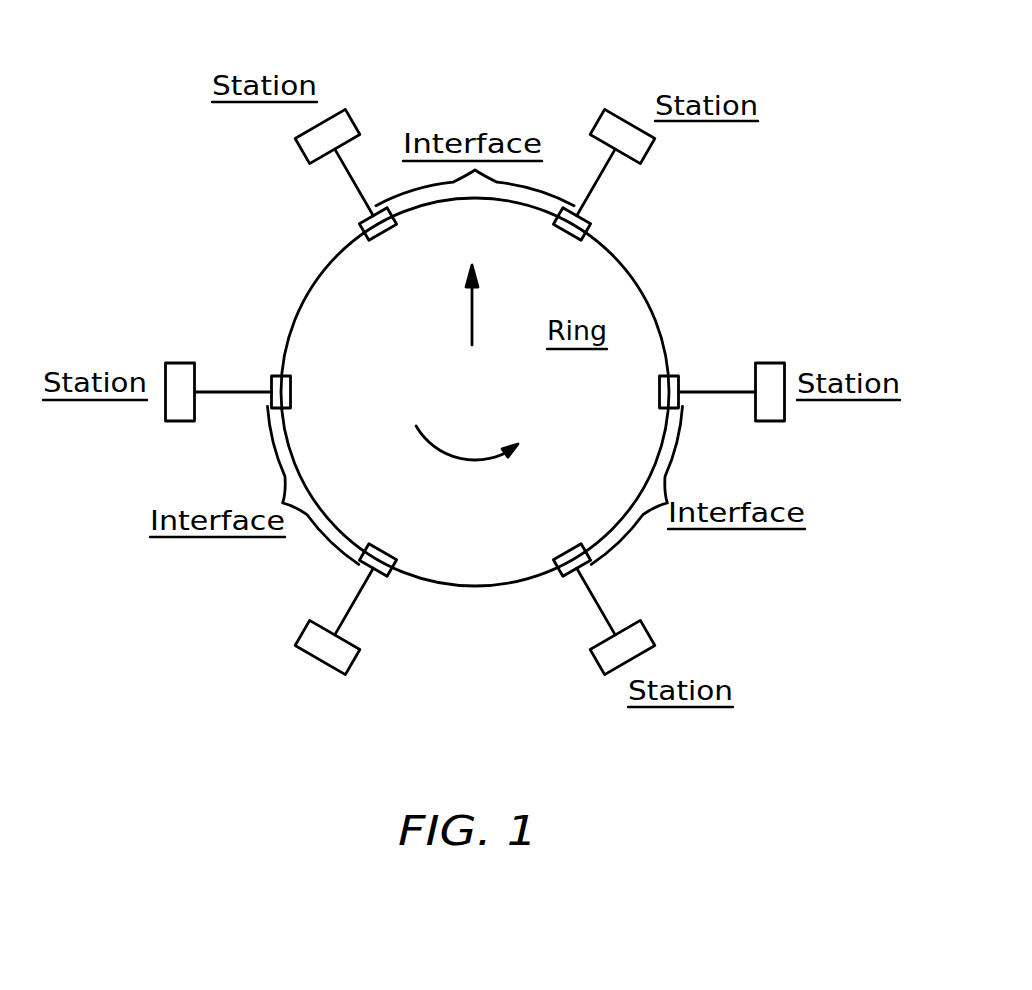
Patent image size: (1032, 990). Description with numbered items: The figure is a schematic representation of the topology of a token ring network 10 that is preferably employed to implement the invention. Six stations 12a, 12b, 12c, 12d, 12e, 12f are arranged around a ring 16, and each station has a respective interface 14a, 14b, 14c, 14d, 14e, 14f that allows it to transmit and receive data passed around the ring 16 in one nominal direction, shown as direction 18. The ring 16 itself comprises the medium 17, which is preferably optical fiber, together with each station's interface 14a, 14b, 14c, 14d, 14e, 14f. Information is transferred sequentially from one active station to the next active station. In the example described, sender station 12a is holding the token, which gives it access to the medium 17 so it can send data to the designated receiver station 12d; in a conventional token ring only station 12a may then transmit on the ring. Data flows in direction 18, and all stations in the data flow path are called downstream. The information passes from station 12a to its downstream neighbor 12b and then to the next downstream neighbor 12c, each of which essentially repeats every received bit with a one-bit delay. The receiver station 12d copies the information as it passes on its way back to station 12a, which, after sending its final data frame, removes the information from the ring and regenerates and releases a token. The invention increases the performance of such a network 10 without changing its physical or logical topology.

The token ring network 10 is at (655, 78).
The sender station 12a is at (352, 118).
The station 12b is at (178, 420).
The station 12c is at (352, 664).
The receiver station 12d is at (643, 626).
The station 12e is at (768, 365).
The station 12f is at (653, 143).
The interface 14a is at (387, 236).
The interface 14b is at (293, 392).
The interface 14c is at (385, 548).
The interface 14d is at (565, 549).
The interface 14e is at (657, 392).
The interface 14f is at (560, 238).
The ring 16 is at (491, 316).
The medium 17 is at (636, 280).
The direction 18 is at (455, 459).